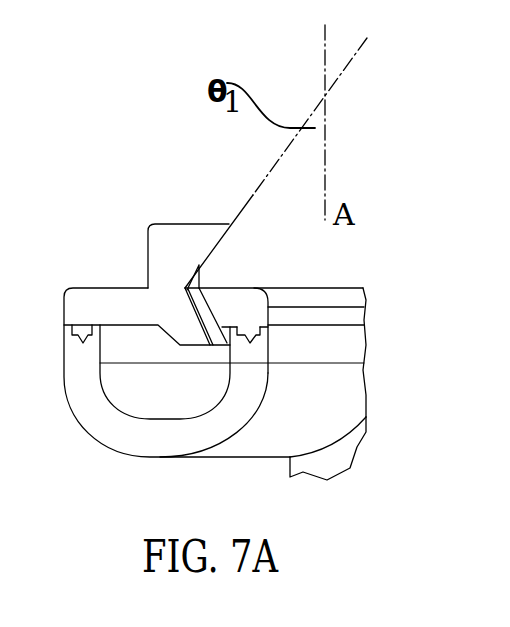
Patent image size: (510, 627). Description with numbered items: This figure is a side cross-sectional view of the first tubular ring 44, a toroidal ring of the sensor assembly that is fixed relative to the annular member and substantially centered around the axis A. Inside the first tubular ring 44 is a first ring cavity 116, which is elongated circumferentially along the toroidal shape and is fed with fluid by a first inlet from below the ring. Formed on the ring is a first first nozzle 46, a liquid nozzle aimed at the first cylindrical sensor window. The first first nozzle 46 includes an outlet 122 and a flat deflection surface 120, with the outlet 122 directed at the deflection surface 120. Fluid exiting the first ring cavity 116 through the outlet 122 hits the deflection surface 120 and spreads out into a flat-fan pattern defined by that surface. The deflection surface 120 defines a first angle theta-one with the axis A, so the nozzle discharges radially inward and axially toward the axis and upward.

The first tubular ring 44 is at (66, 388).
The first first nozzle 46 is at (188, 222).
The first ring cavity 116 is at (142, 420).
The deflection surface 120 is at (224, 240).
The outlet 122 is at (216, 314).